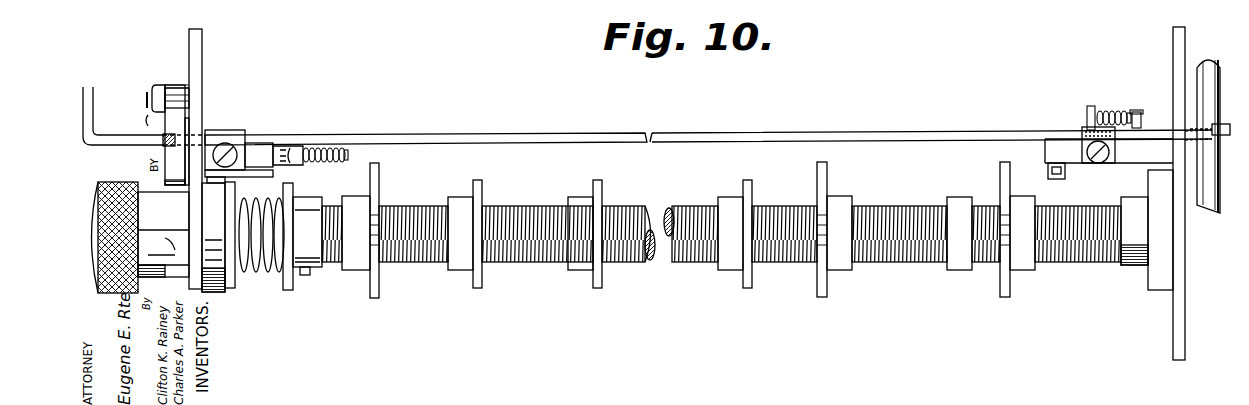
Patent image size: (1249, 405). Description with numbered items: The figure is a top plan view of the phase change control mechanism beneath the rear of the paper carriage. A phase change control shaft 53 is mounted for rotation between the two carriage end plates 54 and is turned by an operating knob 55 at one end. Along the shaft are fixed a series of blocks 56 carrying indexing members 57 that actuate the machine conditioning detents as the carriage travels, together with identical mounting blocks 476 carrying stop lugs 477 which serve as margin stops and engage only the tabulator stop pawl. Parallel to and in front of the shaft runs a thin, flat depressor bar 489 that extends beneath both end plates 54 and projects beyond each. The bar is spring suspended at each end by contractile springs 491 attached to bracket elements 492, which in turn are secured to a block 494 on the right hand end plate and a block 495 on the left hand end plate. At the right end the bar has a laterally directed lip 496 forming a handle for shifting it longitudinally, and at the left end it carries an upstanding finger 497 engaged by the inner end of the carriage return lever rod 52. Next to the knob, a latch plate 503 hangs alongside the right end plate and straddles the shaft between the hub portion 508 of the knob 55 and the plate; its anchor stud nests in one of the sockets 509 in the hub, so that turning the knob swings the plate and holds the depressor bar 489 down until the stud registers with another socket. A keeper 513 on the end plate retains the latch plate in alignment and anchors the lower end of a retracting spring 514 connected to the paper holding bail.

The carriage return lever rod 52 is at (1205, 58).
The phase change control shaft 53 is at (526, 262).
The carriage end plates 54 is at (202, 60).
The operating knob 55 is at (112, 182).
The blocks 56 is at (456, 262).
The indexing members 57 is at (483, 190).
The mounting blocks 476 is at (357, 258).
The stop lugs 477 is at (379, 178).
The depressor bar 489 is at (718, 132).
The contractile springs 491 is at (345, 142).
The bracket elements 492 is at (240, 152).
The block 494 is at (316, 147).
The block 495 is at (1060, 145).
The lip 496 is at (90, 95).
The finger 497 is at (1212, 126).
The latch plate 503 is at (178, 160).
The hub portion 508 is at (226, 292).
The sockets 509 is at (149, 236).
The keeper 513 is at (148, 121).
The retracting spring 514 is at (160, 98).